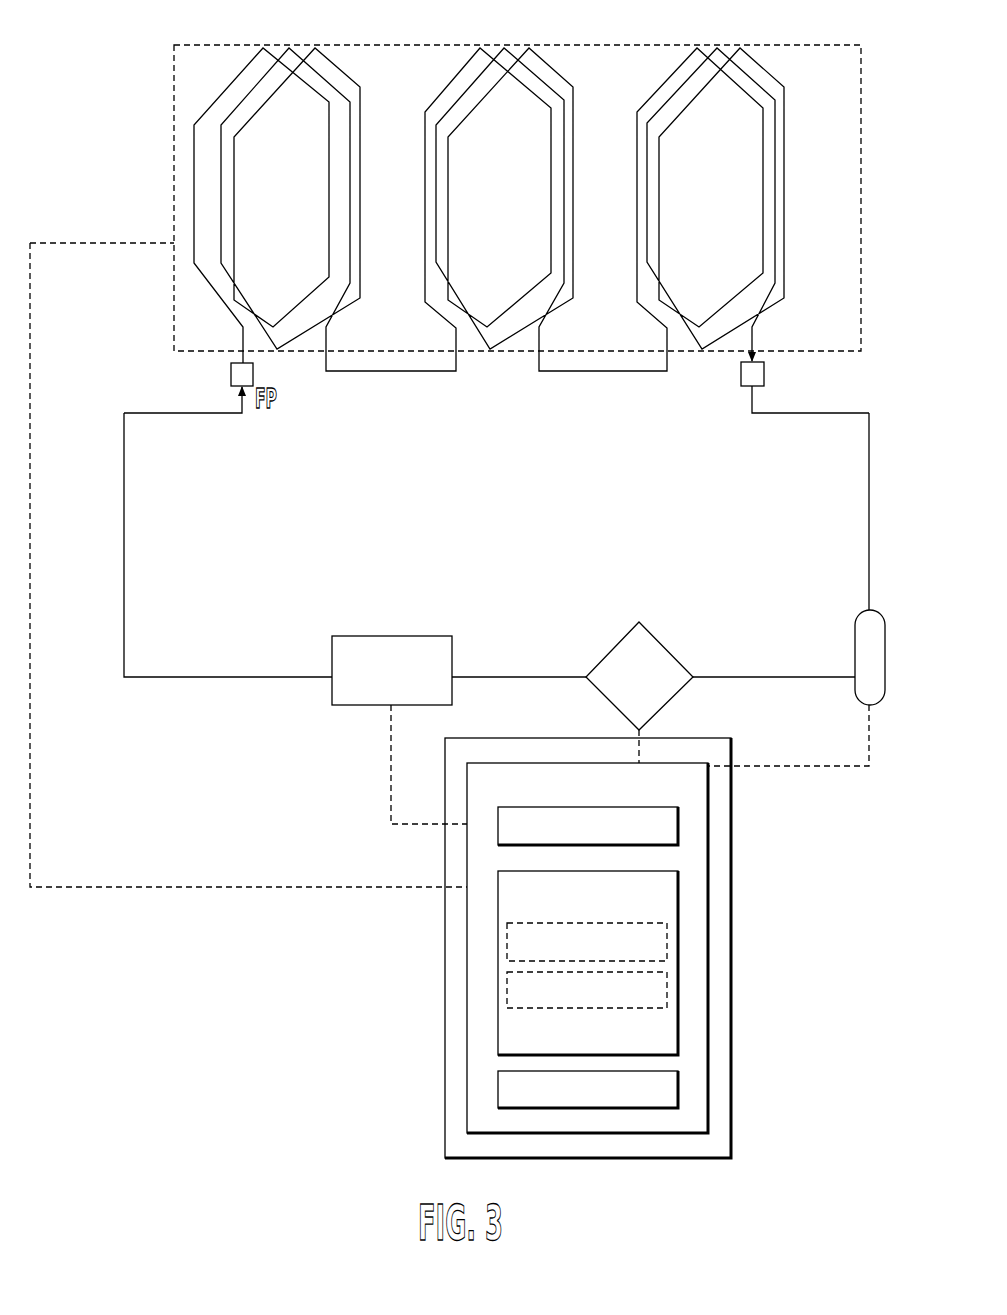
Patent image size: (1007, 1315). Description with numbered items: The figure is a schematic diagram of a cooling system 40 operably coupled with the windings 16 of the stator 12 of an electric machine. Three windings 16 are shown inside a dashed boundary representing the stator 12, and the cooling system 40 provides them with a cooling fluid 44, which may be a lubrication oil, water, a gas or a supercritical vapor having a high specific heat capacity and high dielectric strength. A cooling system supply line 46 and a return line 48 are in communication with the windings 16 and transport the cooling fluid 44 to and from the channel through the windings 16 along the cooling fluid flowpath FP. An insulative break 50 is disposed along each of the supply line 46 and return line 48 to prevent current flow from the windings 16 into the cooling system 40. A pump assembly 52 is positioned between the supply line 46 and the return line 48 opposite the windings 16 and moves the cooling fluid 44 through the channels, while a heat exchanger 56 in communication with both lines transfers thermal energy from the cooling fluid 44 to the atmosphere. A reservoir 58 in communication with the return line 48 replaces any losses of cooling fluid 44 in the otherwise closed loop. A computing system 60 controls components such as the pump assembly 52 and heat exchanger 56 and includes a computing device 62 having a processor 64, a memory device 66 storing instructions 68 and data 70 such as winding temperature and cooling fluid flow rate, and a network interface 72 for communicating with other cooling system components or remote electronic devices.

The stator 12 is at (861, 159).
The windings 16 is at (773, 73).
The cooling system 40 is at (916, 476).
The cooling fluid 44 is at (123, 545).
The cooling system supply line 46 is at (237, 398).
The return line 48 is at (752, 402).
The insulative break 50 is at (233, 372).
The pump assembly 52 is at (363, 636).
The heat exchanger 56 is at (635, 623).
The reservoir 58 is at (882, 660).
The computing system 60 is at (732, 845).
The computing device 62 is at (709, 927).
The processor 64 is at (599, 843).
The memory device 66 is at (599, 906).
The instructions 68 is at (599, 956).
The data 70 is at (599, 1006).
The network interface 72 is at (599, 1104).